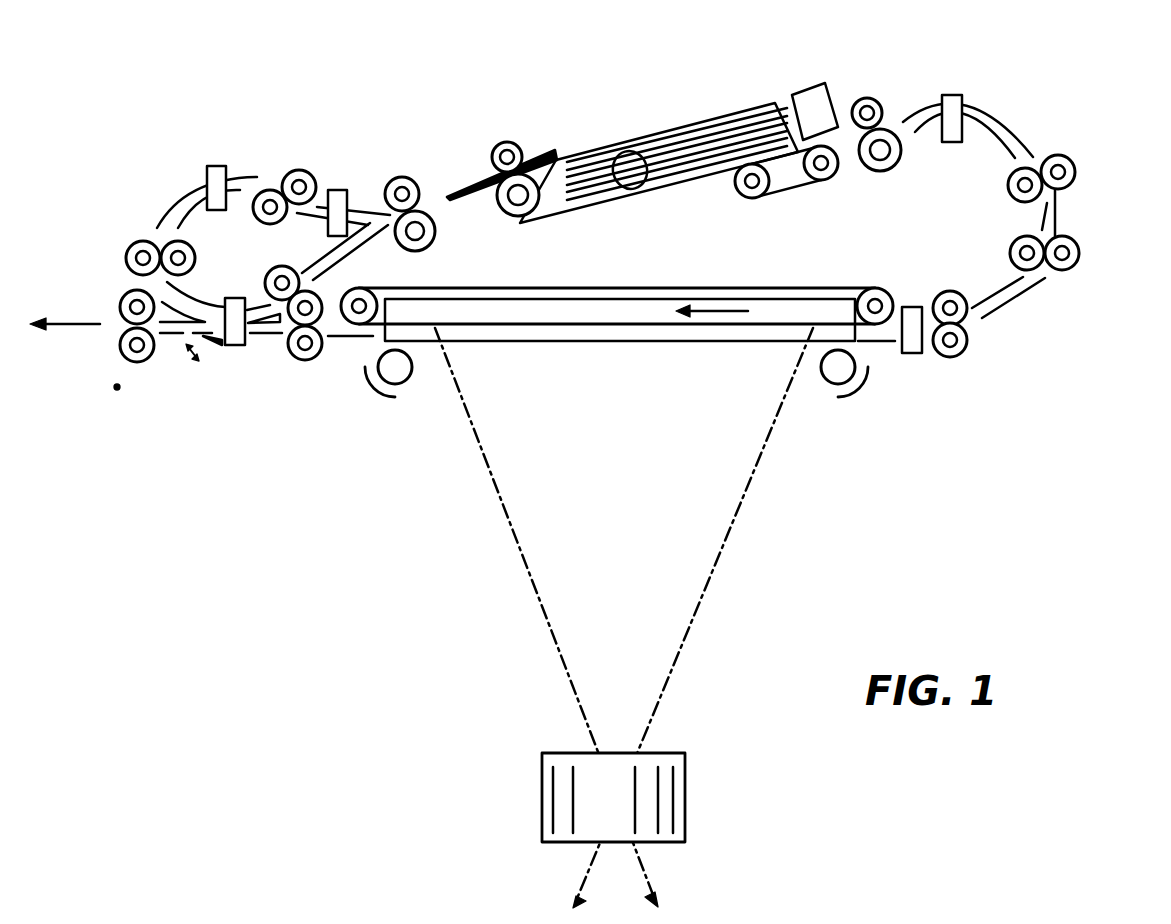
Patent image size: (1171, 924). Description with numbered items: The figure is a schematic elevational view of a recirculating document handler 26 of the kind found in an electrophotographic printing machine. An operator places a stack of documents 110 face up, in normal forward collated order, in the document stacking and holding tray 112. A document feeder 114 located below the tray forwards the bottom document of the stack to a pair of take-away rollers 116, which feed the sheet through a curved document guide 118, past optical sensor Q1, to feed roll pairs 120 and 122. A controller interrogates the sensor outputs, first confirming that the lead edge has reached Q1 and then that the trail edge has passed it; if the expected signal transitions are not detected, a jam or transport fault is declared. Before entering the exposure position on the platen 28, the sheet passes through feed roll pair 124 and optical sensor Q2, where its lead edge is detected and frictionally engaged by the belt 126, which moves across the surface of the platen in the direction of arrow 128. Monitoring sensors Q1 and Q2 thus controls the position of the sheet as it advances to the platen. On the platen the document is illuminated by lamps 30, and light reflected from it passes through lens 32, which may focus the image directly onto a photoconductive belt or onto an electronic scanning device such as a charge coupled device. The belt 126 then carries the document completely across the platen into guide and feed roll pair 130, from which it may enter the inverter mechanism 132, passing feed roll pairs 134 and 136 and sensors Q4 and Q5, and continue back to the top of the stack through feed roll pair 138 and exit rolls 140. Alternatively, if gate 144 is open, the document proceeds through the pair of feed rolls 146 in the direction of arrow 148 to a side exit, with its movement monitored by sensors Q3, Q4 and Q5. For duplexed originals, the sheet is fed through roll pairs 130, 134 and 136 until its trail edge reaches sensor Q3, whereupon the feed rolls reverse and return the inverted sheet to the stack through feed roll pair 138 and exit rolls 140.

The recirculating document handler 26 is at (1053, 130).
The platen 28 is at (618, 330).
The lamps 30 is at (412, 383).
The lens 32 is at (687, 797).
The stack of documents 110 is at (633, 190).
The document stacking and holding tray 112 is at (552, 222).
The document feeder 114 is at (783, 188).
The take-away rollers 116 is at (892, 128).
The document guide 118 is at (1007, 127).
The feed roll pair 120 is at (1007, 190).
The feed roll pair 122 is at (1010, 252).
The feed roll pair 124 is at (965, 343).
The belt 126 is at (788, 288).
The arrow 128 is at (720, 311).
The guide and feed roll pair 130 is at (320, 323).
The inverter mechanism 132 is at (146, 210).
The feed roll pair 134 is at (130, 250).
The feed roll pair 136 is at (285, 175).
The feed roll pair 138 is at (432, 203).
The exit rolls 140 is at (517, 142).
The gate 144 is at (218, 345).
The feed rolls 146 is at (120, 352).
The arrow 148 is at (72, 324).
The optical sensor Q1 is at (952, 94).
The optical sensor Q2 is at (912, 354).
The sensor Q3 is at (234, 346).
The sensor Q4 is at (215, 165).
The sensor Q5 is at (340, 190).